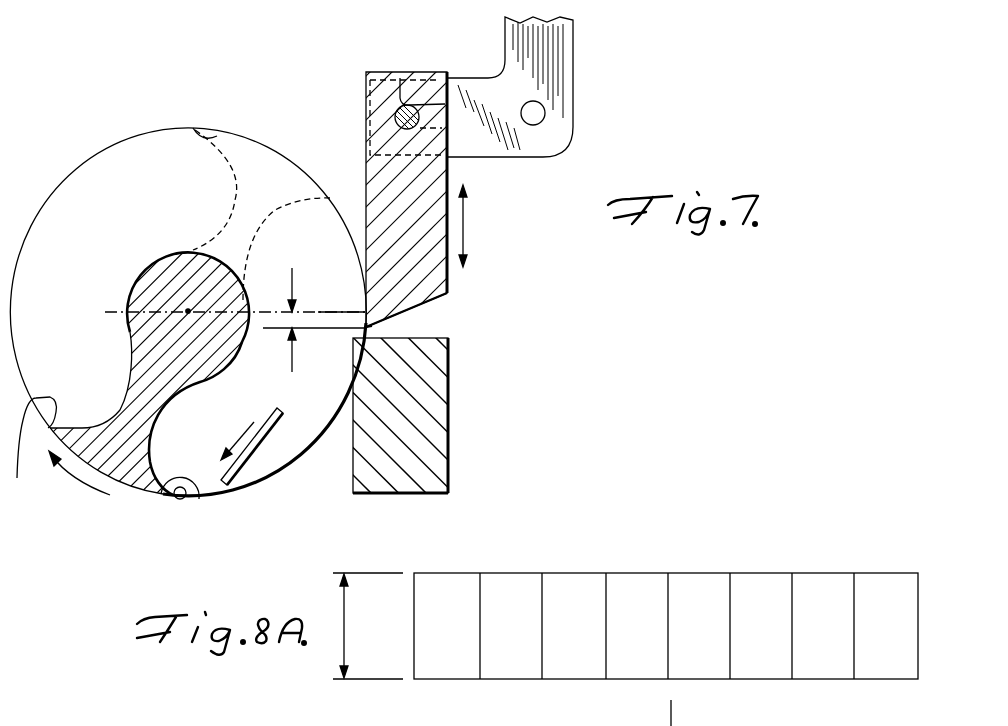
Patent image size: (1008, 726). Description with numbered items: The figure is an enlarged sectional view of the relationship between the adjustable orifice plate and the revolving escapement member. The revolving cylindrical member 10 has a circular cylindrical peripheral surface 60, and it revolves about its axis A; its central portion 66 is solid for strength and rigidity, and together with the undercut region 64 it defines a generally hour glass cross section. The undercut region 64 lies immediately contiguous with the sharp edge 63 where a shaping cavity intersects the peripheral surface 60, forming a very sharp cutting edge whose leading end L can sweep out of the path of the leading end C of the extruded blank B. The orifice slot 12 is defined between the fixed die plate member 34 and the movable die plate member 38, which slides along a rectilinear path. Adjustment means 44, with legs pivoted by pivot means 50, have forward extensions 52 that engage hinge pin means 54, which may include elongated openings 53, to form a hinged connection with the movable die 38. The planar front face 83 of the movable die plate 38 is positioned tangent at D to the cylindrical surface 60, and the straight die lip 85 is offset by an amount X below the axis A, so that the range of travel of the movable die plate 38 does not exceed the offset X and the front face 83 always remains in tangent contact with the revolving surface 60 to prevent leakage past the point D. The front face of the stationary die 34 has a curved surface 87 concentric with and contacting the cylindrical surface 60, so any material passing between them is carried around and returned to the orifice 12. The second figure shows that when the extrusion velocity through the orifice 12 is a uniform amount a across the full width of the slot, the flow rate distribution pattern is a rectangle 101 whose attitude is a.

In FIG. 7, the revolving cylindrical member 10 is at (108, 125).
In FIG. 7, the orifice slot 12 is at (368, 329).
In FIG. 7, the fixed die plate member 34 is at (435, 453).
In FIG. 7, the movable die plate member 38 is at (427, 272).
In FIG. 7, the adjustment means 44 is at (590, 48).
In FIG. 7, the pivot means 50 is at (547, 116).
In FIG. 7, the forward extensions 52 is at (384, 92).
In FIG. 7, the elongated openings 53 is at (431, 96).
In FIG. 7, the hinge pin means 54 is at (404, 78).
In FIG. 7, the circular cylindrical peripheral surface 60 is at (55, 188).
In FIG. 7, the sharp edge 63 is at (197, 127).
In FIG. 7, the undercut region 64 is at (233, 197).
In FIG. 7, the central portion 66 is at (133, 285).
In FIG. 7, the planar front face 83 is at (363, 168).
In FIG. 7, the straight die lip 85 is at (362, 328).
In FIG. 7, the curved surface 87 is at (354, 357).
In FIG. 8A, the rectangle 101 is at (833, 680).
In FIG. 7, the axis of rotation A is at (188, 311).
In FIG. 7, the blank B is at (270, 457).
In FIG. 7, the leading end of the extruded blank C is at (223, 495).
In FIG. 7, the point of tangency D is at (367, 310).
In FIG. 7, the leading end of the cutting edge L is at (186, 498).
In FIG. 7, the offset X is at (235, 328).
In FIG. 8A, the extrusion velocity a is at (368, 626).